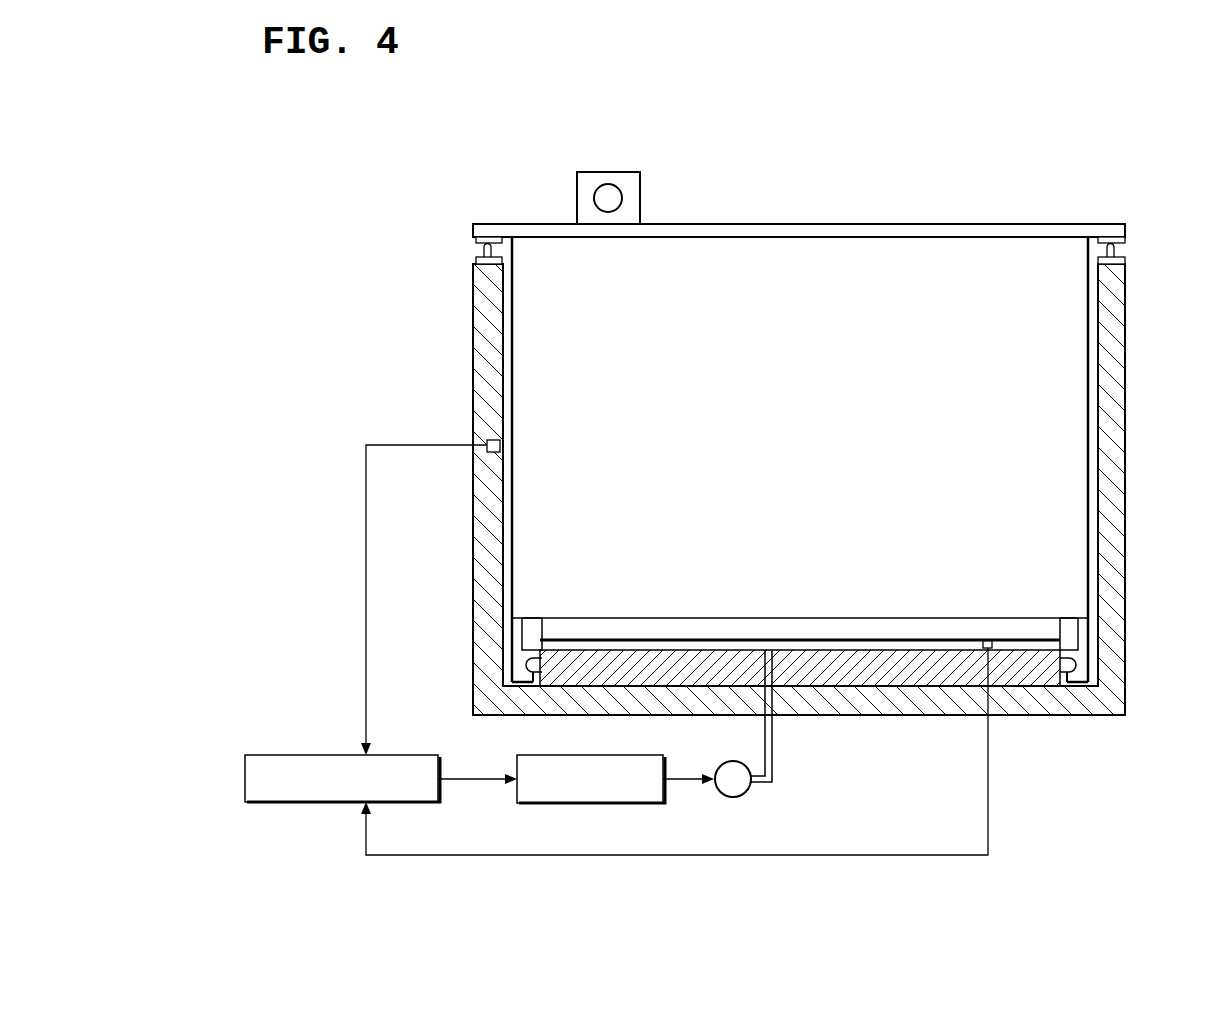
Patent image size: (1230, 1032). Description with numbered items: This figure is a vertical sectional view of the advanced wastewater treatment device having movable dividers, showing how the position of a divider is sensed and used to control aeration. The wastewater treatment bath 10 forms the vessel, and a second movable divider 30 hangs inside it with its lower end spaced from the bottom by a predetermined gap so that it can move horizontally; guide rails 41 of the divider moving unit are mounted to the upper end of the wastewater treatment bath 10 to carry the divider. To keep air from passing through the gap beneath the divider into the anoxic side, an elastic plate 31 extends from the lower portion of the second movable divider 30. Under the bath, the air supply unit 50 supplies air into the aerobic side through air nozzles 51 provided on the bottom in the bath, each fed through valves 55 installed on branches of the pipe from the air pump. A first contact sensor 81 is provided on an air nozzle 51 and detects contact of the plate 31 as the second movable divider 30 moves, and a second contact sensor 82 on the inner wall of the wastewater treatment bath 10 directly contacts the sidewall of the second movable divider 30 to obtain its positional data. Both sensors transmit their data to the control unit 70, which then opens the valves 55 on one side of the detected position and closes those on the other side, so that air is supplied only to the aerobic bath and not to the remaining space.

The wastewater treatment bath 10 is at (1135, 344).
The second movable divider 30 is at (1062, 217).
The elastic plate 31 is at (1053, 632).
The guide rails 41 is at (1126, 262).
The air supply unit 50 is at (581, 818).
The air nozzles 51 is at (1068, 672).
The valves 55 is at (726, 798).
The control unit 70 is at (245, 779).
The first contact sensor 81 is at (998, 650).
The second contact sensor 82 is at (475, 442).